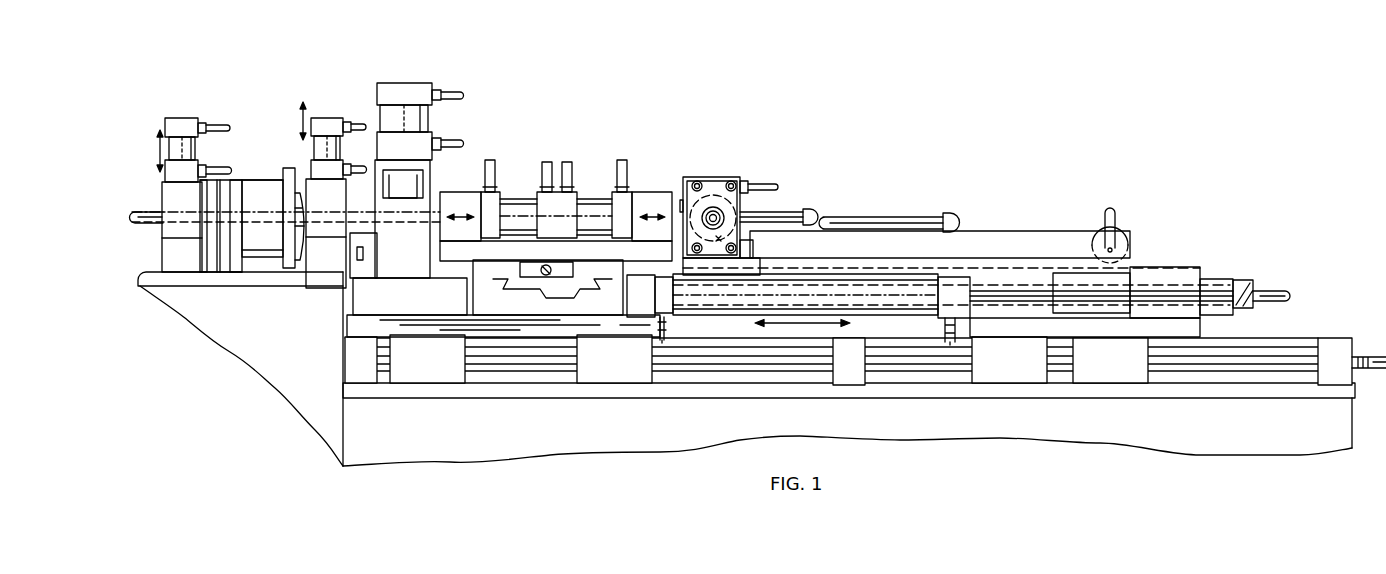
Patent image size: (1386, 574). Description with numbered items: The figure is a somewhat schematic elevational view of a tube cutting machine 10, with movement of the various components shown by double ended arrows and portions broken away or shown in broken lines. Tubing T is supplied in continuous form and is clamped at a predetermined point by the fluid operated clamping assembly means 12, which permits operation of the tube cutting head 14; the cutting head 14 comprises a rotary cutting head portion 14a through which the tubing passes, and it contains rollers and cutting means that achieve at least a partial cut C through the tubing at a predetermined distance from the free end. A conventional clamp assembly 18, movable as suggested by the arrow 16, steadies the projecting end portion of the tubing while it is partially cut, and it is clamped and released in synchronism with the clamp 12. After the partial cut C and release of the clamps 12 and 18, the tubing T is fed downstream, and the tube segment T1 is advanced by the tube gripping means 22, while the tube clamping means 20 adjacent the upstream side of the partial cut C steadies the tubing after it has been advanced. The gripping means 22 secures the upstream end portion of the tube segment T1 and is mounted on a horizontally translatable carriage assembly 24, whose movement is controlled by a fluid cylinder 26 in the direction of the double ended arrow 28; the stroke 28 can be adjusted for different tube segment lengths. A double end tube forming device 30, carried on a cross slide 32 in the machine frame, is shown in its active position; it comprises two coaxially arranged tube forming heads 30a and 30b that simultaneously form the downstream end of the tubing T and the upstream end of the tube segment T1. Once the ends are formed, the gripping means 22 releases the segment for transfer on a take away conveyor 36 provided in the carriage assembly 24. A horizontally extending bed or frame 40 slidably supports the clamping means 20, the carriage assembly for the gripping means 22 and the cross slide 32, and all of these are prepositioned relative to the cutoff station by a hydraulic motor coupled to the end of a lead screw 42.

The tube cutting machine 10 is at (185, 318).
The fluid operated clamping assembly means 12 is at (180, 118).
The tube cutting head 14 is at (266, 180).
The rotary cutting head portion 14a is at (312, 273).
The arrow 16 is at (301, 127).
The clamp assembly 18 is at (322, 118).
The tube clamping means 20 is at (410, 83).
The tube gripping means 22 is at (716, 178).
The carriage assembly 24 is at (716, 275).
The fluid cylinder 26 is at (735, 315).
The double ended arrow 28 is at (818, 322).
The double end tube forming device 30 is at (516, 178).
The tube forming head 30a is at (462, 192).
The tube forming head 30b is at (656, 191).
The cross slide 32 is at (493, 286).
The take away conveyor 36 is at (989, 231).
The bed or frame 40 is at (363, 325).
The lead screw 42 is at (1363, 357).
The tubing T is at (153, 212).
The tube segment T1 is at (785, 210).
The partial cut C is at (298, 220).